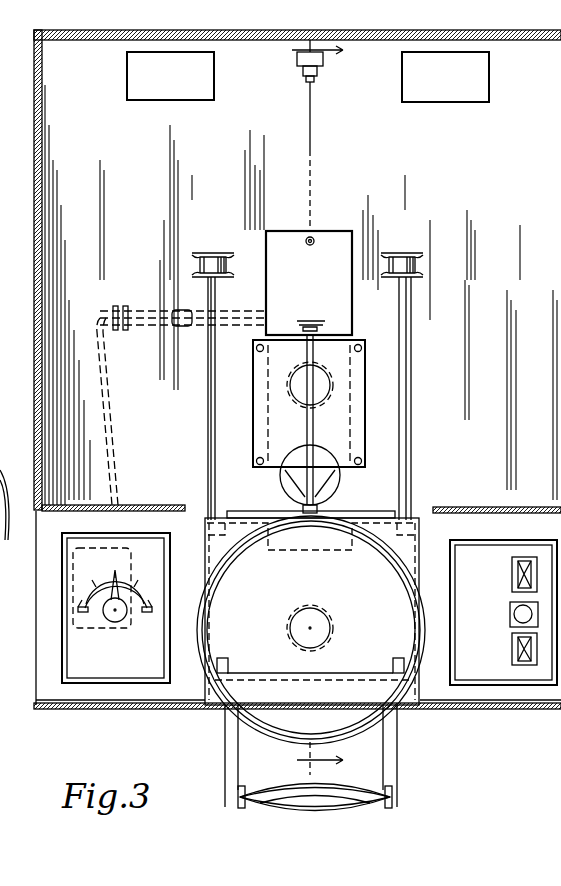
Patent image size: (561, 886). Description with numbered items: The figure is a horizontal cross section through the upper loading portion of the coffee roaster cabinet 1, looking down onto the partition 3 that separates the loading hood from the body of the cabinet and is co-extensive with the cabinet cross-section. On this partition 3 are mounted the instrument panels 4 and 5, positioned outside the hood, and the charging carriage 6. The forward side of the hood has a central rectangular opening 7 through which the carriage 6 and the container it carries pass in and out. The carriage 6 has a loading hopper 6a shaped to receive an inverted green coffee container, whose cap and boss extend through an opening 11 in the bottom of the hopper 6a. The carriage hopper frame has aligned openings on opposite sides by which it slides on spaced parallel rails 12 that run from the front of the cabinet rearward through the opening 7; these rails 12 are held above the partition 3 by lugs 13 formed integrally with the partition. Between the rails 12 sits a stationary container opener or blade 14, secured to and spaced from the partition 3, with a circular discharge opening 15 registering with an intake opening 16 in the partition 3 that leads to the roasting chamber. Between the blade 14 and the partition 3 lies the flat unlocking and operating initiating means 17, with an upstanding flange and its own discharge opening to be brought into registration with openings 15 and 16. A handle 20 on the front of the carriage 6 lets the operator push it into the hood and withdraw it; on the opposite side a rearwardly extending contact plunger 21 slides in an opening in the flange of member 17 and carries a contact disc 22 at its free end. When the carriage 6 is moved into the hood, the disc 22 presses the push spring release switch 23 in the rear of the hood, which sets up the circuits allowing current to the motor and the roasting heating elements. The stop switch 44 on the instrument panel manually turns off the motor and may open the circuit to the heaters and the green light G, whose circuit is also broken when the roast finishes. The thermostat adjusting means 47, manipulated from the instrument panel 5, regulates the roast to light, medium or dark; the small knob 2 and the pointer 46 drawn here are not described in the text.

The cabinet 1 is at (34, 200).
The knob 2 is at (5, 492).
The partition 3 is at (509, 704).
The instrument panel 4 is at (545, 726).
The instrument panel 5 is at (116, 608).
The charging carriage 6 is at (428, 680).
The loading hopper 6a is at (228, 570).
The central rectangular opening 7 is at (188, 510).
The opening 11 is at (350, 608).
The rails 12 is at (208, 410).
The lugs 13 is at (214, 255).
The container opener or blade 14 is at (298, 438).
The circular discharge opening 15 is at (296, 372).
The intake opening 16 is at (325, 372).
The unlocking and operating initiating means 17 is at (278, 487).
The handle 20 is at (395, 797).
The contact plunger 21 is at (314, 430).
The contact disc 22 is at (315, 312).
The push spring release switch 23 is at (318, 68).
The stop switch 44 is at (512, 605).
The pointer 46 is at (117, 580).
The thermostat adjusting means 47 is at (104, 375).
The light G is at (526, 560).